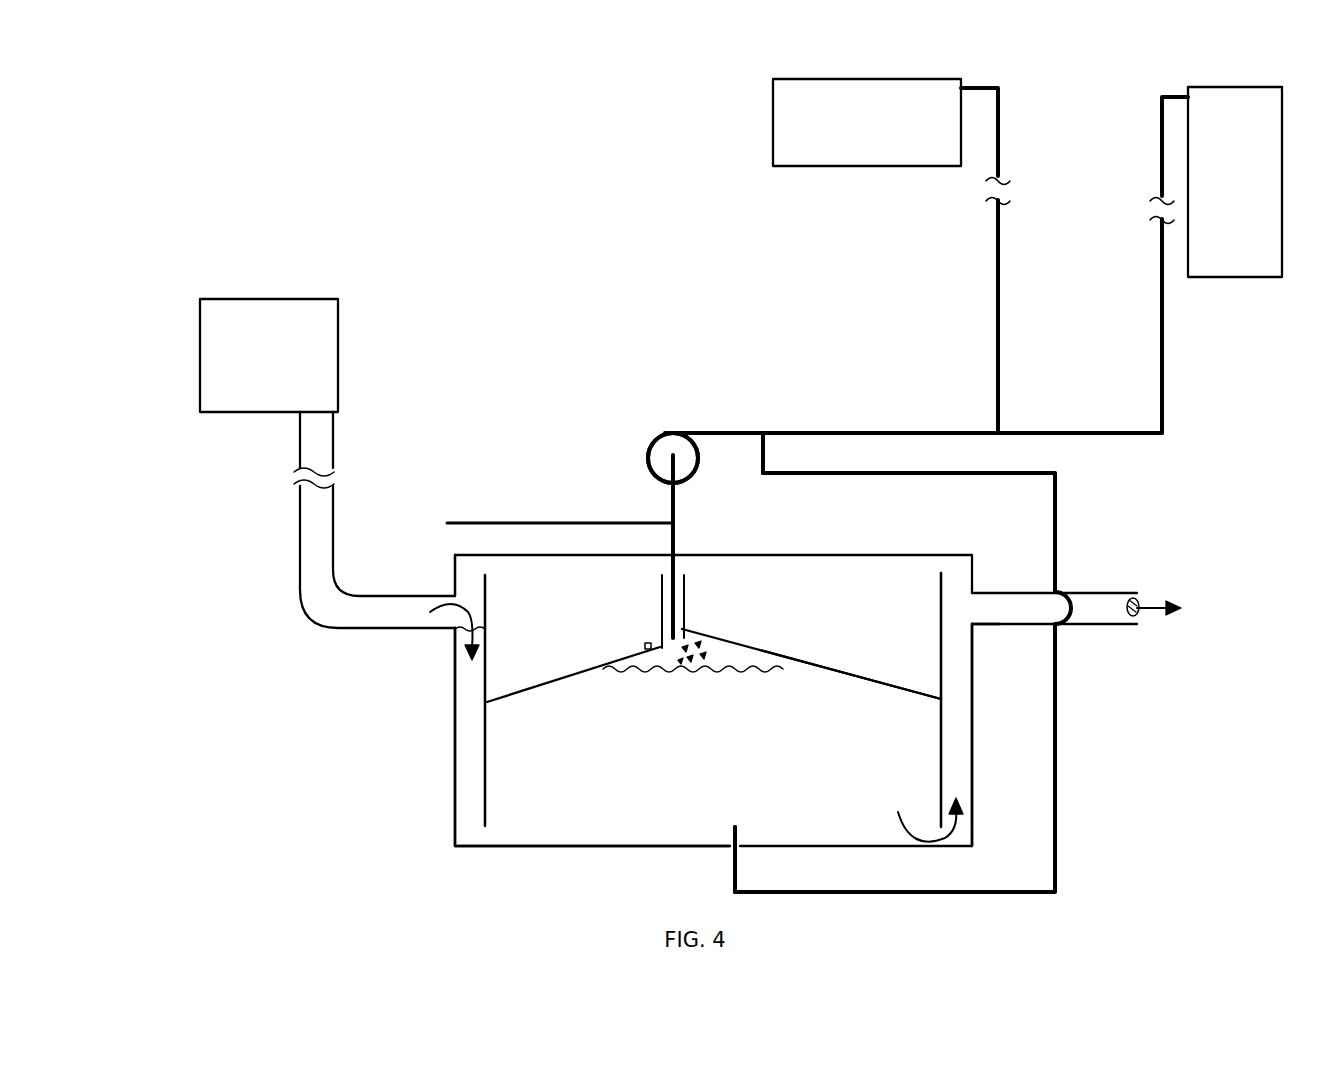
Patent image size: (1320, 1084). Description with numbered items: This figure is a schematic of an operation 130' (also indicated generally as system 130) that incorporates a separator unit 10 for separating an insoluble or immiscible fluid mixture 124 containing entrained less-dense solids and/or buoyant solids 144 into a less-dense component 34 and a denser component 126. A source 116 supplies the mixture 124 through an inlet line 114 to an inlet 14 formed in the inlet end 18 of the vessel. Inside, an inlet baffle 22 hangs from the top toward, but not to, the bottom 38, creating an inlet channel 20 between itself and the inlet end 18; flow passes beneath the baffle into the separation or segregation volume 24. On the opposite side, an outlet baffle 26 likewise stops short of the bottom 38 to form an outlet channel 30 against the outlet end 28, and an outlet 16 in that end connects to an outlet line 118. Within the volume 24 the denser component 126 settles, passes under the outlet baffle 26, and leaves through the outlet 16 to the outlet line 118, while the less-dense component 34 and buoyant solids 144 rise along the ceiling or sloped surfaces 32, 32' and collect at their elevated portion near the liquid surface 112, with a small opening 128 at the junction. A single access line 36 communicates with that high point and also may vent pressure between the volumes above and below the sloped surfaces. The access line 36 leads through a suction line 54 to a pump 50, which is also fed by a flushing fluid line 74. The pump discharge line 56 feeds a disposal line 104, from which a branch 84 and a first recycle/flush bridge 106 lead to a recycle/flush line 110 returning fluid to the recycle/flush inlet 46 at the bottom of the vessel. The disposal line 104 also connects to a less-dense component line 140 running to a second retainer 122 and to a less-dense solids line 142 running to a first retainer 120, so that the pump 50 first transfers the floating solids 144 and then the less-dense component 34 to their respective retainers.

The separator unit 10 is at (430, 862).
The inlet 14 is at (455, 595).
The outlet 16 is at (978, 628).
The inlet end 18 is at (455, 805).
The inlet channel 20 is at (467, 748).
The inlet baffle 22 is at (485, 808).
The separation or segregation volume 24 is at (607, 792).
The outlet baffle 26 is at (940, 732).
The outlet end 28 is at (972, 770).
The outlet channel 30 is at (954, 705).
The ceiling or sloped surface 32 is at (573, 697).
The ceiling or sloped surface 32' is at (811, 682).
The less-dense component 34 is at (778, 653).
The access line 36 is at (664, 628).
The bottom 38 is at (592, 848).
The recycle/flush inlet 46 is at (733, 835).
The pump 50 is at (663, 445).
The suction line 54 is at (650, 463).
The discharge line 56 is at (696, 432).
The flushing fluid line 74 is at (487, 522).
The branch conduit 84 is at (762, 458).
The disposal line 104 is at (800, 430).
The first recycle/flush bridge 106 is at (1028, 473).
The recycle/flush line 110 is at (1055, 790).
The liquid surface 112 is at (672, 672).
The inlet line 114 is at (362, 613).
The source 116 is at (269, 355).
The outlet line 118 is at (1085, 628).
The first retainer 120 is at (1235, 182).
The second retainer 122 is at (867, 122).
The insoluble or immiscible fluid mixture 124 is at (443, 610).
The denser component 126 is at (1152, 607).
The nozzle opening 128 is at (646, 646).
The treatment system 130 is at (337, 160).
The operation 130' is at (217, 715).
The less-dense component line 140 is at (998, 300).
The less-dense solids and/or buoyant solids line 142 is at (1165, 410).
The less-dense solids and/or buoyant solids 144 is at (712, 652).